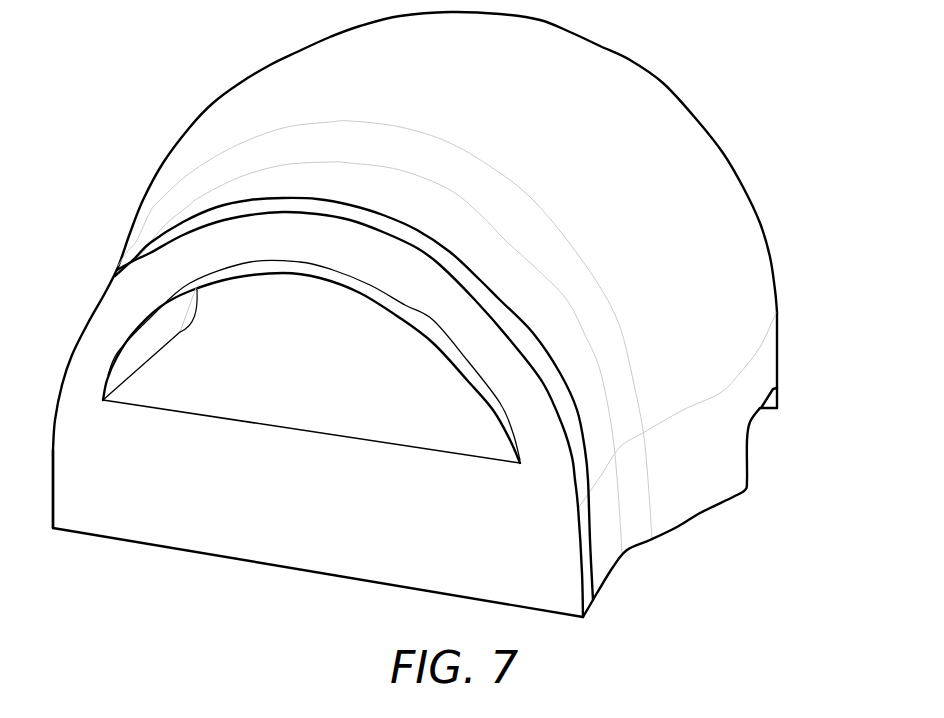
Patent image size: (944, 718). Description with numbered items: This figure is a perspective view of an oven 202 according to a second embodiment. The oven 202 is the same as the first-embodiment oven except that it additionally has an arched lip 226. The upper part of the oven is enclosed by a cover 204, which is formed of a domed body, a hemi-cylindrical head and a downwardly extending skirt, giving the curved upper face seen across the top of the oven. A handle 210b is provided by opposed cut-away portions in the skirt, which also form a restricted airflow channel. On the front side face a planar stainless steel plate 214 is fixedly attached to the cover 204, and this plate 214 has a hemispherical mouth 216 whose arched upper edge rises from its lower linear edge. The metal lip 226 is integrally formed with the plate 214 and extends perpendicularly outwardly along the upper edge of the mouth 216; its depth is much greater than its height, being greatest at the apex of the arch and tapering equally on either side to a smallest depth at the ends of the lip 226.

The oven 202 is at (449, 308).
The cover 204 is at (599, 52).
The handle 210b is at (765, 431).
The plate 214 is at (125, 531).
The mouth 216 is at (264, 423).
The arched lip 226 is at (331, 276).